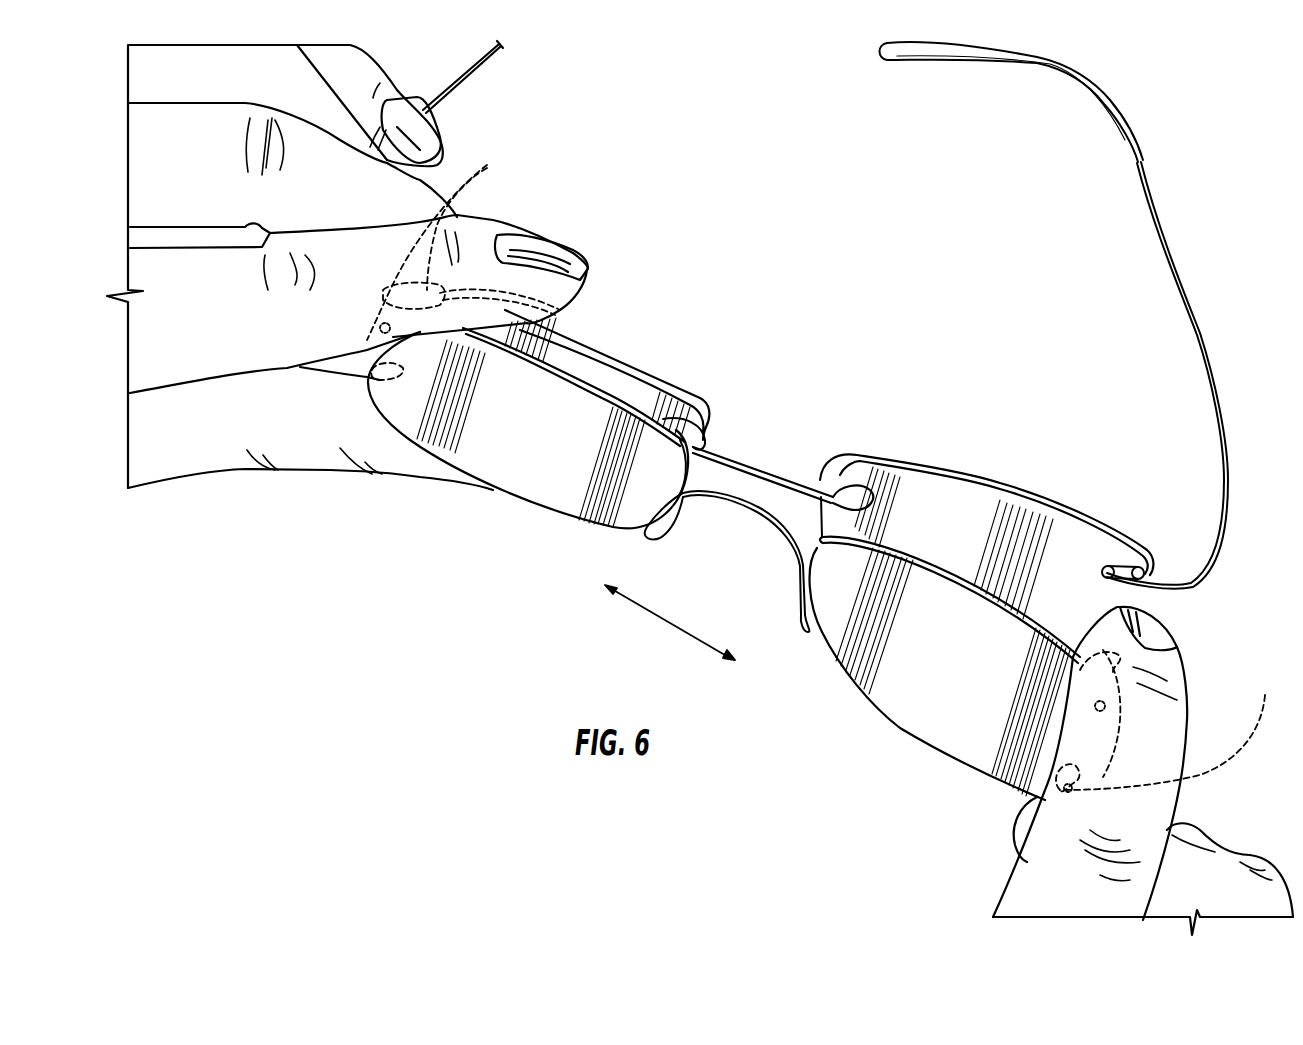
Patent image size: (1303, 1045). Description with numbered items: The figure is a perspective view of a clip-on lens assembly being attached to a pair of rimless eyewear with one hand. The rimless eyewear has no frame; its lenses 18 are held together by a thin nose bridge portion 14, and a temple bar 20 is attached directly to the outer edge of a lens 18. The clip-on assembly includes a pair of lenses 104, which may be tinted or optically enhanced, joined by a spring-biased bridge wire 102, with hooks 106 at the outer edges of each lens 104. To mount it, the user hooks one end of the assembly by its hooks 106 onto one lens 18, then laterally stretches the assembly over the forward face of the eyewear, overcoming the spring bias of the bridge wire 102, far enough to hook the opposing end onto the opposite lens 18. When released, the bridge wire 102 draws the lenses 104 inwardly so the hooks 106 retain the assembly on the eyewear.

The nose bridge portion 14 is at (772, 465).
The lens 18 is at (1018, 487).
The temple bar 20 is at (1195, 337).
The bridge wire 102 is at (757, 518).
The lens 104 is at (533, 478).
The hook 106 is at (487, 165).